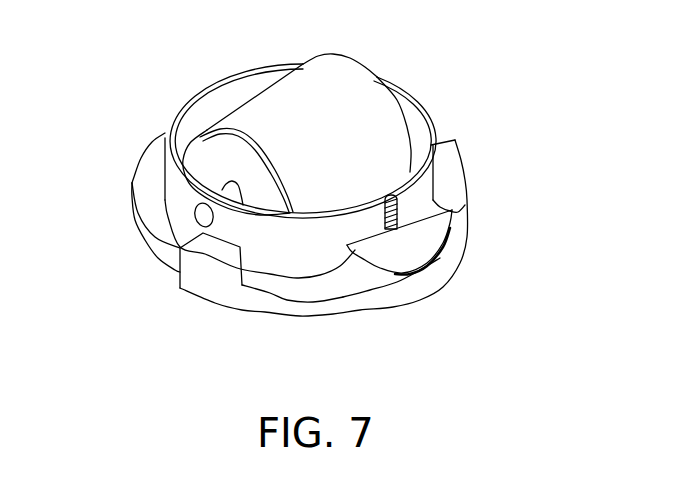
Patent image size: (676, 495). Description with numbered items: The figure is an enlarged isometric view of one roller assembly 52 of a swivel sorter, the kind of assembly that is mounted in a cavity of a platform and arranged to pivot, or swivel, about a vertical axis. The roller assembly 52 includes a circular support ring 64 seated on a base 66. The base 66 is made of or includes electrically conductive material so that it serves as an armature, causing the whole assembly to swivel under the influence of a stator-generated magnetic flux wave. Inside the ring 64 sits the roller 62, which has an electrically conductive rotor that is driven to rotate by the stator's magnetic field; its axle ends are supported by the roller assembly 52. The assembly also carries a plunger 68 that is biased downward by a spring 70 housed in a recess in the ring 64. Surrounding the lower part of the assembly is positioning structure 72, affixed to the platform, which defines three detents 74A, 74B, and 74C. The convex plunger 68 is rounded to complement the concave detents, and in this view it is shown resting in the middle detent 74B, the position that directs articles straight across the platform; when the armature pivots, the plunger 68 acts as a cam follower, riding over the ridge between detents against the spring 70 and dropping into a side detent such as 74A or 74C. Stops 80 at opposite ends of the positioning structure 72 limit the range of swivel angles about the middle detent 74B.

The roller assembly 52 is at (233, 74).
The roller 62 is at (335, 68).
The circular support ring 64 is at (165, 180).
The base 66 is at (155, 143).
The plunger 68 is at (420, 255).
The spring 70 is at (420, 207).
The positioning structure 72 is at (353, 307).
The side detent 74A is at (290, 297).
The middle detent 74B is at (420, 265).
The detent 74C is at (467, 205).
The stops 80 is at (225, 268).